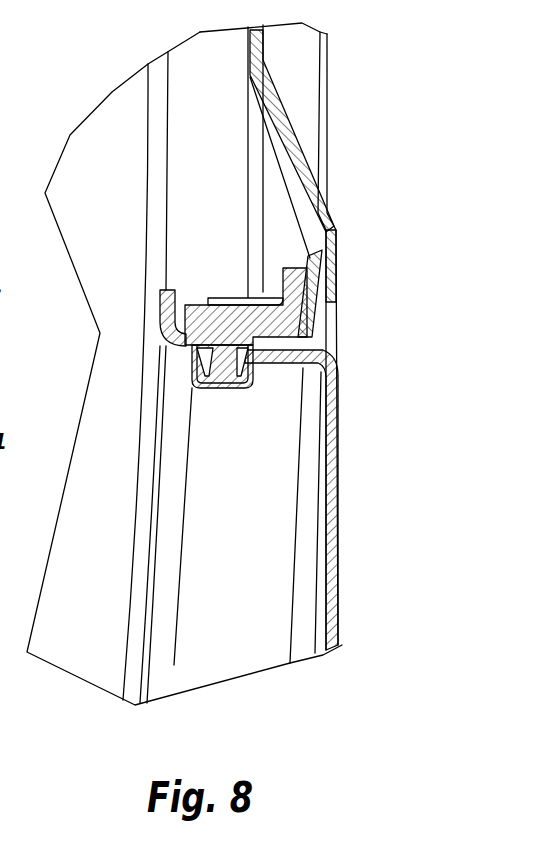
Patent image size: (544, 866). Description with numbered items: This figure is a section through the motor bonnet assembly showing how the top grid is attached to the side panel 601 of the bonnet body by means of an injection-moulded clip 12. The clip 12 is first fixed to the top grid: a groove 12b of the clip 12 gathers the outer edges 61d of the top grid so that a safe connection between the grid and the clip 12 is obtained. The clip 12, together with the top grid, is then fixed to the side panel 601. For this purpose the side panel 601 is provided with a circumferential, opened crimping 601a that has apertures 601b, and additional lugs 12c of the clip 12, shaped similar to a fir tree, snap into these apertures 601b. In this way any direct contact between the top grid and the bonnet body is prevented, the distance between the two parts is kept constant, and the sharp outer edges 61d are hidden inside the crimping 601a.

The side panel 601 is at (184, 364).
The clip 12 is at (242, 296).
The groove 12b is at (190, 303).
The additional lugs 12c is at (200, 352).
The outer edges 61d is at (203, 302).
The crimping 601a is at (160, 306).
The apertures 601b is at (197, 356).